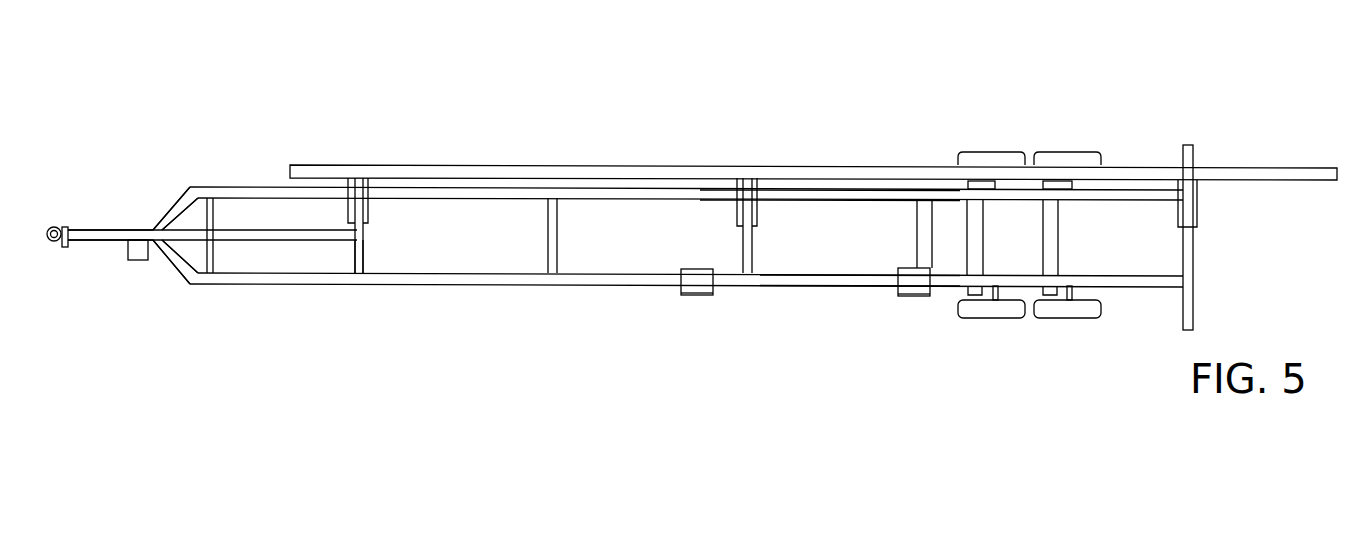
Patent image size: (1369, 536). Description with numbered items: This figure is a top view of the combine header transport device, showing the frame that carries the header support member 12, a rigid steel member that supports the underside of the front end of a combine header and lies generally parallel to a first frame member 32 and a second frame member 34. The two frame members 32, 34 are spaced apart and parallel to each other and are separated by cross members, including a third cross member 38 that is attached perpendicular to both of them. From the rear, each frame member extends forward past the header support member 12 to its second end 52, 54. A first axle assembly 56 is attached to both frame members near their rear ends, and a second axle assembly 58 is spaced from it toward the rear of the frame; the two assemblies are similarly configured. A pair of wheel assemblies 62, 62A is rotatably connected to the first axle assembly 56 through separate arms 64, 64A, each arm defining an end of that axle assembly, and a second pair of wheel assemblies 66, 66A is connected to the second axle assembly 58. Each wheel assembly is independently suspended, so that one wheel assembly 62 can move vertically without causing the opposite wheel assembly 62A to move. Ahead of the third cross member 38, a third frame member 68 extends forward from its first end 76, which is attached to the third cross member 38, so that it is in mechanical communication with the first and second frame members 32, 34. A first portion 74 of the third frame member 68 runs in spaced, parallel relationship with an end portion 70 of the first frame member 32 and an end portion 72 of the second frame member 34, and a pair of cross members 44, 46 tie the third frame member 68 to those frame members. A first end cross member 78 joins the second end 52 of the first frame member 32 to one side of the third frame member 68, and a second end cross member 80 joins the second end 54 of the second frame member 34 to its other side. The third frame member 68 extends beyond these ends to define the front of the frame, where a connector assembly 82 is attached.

The header support member 12 is at (1337, 171).
The first frame member 32 is at (812, 198).
The second frame member 34 is at (842, 288).
The third cross member 38 is at (364, 260).
The cross member 44 is at (214, 264).
The cross member 46 is at (214, 222).
The second end of the first frame member 52 is at (187, 190).
The second end of the second frame member 54 is at (187, 282).
The first axle assembly 56 is at (984, 246).
The second axle assembly 58 is at (1059, 246).
The first wheel assembly 62 is at (992, 319).
The second wheel assembly 62A is at (992, 150).
The arm 64 is at (966, 294).
The arm 64A is at (967, 184).
The wheel assembly 66 is at (1067, 319).
The wheel assembly 66A is at (1067, 150).
The third frame member 68 is at (97, 241).
The end portion of the first frame member 70 is at (248, 188).
The end portion of the second frame member 72 is at (465, 284).
The first portion of the third frame member 74 is at (305, 241).
The first end of the third frame member 76 is at (364, 237).
The first end cross member 78 is at (167, 207).
The second end cross member 80 is at (165, 257).
The connector assembly 82 is at (66, 226).